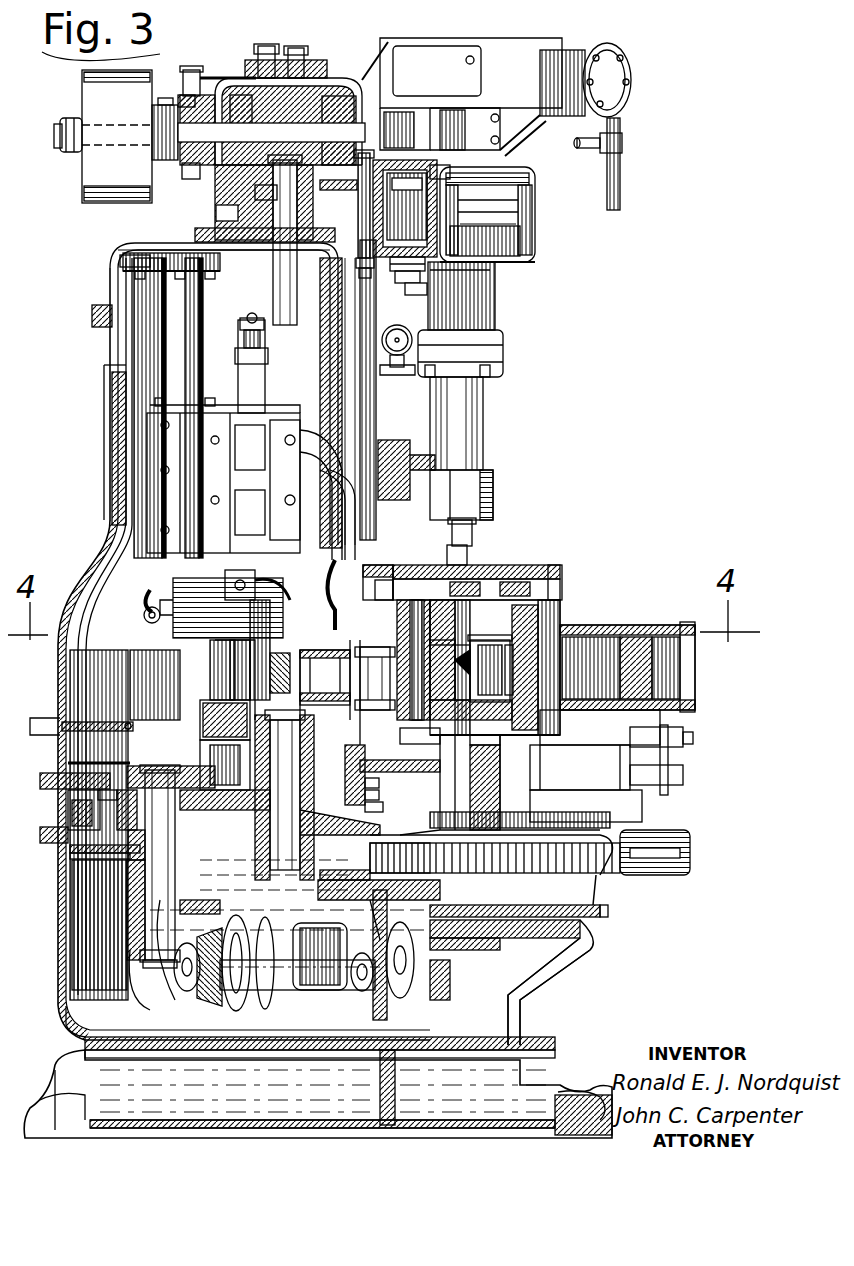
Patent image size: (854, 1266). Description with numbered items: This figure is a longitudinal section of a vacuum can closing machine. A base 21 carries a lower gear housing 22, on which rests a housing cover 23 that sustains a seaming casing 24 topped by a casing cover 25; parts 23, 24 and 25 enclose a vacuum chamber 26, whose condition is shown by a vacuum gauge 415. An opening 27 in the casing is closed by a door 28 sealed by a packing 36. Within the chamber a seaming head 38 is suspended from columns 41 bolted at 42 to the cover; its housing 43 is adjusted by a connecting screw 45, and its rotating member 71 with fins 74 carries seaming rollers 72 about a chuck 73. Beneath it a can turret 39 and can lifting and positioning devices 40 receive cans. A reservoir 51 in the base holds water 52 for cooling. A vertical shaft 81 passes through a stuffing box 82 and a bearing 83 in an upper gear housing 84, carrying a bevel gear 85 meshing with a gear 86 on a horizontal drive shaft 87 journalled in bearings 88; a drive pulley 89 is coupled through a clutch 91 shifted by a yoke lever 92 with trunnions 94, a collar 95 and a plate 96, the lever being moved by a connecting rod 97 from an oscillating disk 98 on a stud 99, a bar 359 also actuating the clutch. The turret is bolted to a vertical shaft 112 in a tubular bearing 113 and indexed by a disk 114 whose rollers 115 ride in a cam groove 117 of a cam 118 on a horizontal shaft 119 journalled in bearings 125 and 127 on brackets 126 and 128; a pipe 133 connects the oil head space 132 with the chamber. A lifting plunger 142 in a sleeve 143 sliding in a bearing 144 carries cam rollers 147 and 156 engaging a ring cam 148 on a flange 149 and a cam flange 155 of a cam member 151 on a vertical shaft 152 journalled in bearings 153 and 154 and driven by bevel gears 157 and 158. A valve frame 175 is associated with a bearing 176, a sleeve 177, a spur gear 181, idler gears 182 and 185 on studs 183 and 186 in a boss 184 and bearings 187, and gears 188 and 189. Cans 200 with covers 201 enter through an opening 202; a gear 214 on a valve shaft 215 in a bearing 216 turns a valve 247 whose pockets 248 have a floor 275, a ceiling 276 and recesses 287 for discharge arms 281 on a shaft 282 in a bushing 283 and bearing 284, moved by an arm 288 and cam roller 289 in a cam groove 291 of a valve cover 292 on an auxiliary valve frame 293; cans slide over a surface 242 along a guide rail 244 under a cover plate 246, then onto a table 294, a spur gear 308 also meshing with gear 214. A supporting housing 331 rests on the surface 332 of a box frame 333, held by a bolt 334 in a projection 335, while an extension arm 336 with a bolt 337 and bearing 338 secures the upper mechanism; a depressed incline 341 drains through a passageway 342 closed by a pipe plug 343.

The base 21 is at (522, 1086).
The lower gear housing 22 is at (62, 1020).
The housing cover 23 is at (68, 821).
The seaming casing 24 is at (112, 352).
The casing cover 25 is at (110, 291).
The vacuum chamber 26 is at (128, 335).
The opening 27 is at (130, 432).
The door 28 is at (112, 410).
The packing 36 is at (115, 380).
The seaming head 38 is at (158, 520).
The can turret 39 is at (292, 655).
The can lifting and positioning devices 40 is at (130, 765).
The columns 41 is at (112, 310).
The bolts 42 is at (130, 258).
The seaming head housing 43 is at (160, 441).
The connecting screw 45 is at (246, 326).
The reservoir 51 is at (545, 1052).
The water 52 is at (462, 1108).
The rotating member 71 is at (150, 613).
The seaming rollers 72 is at (188, 640).
The chuck 73 is at (226, 580).
The fins or annular ridges 74 is at (172, 583).
The vertical shaft 81 is at (252, 355).
The stuffing box 82 is at (230, 254).
The bearing 83 is at (262, 220).
The upper gear housing 84 is at (216, 216).
The bevel gear 85 is at (333, 163).
The bevel gear 86 is at (238, 106).
The horizontal drive shaft 87 is at (262, 133).
The bearings 88 is at (208, 105).
The drive pulley 89 is at (82, 90).
The clutch 91 is at (165, 137).
The yoke lever 92 is at (186, 96).
The trunnions 94 is at (178, 102).
The collar 95 is at (180, 170).
The plate 96 is at (178, 120).
The connecting rod 97 is at (205, 76).
The oscillating disk 98 is at (268, 60).
The stud 99 is at (298, 60).
The vertical shaft 112 is at (302, 772).
The tubular bearing 113 is at (322, 815).
The disk 114 is at (352, 846).
The rollers 115 is at (355, 876).
The cam groove 117 is at (265, 992).
The cam 118 is at (302, 988).
The horizontal shaft 119 is at (450, 978).
The bearing 125 is at (442, 1000).
The bracket 126 is at (342, 990).
The bearing 127 is at (250, 988).
The bracket 128 is at (210, 990).
The head space 132 is at (120, 866).
The pipe 133 is at (392, 340).
The lifting plunger 142 is at (215, 690).
The sleeve 143 is at (220, 722).
The bearing 144 is at (215, 756).
The cam roller 147 is at (140, 882).
The ring cam 148 is at (92, 850).
The flange 149 is at (110, 858).
The cam member 151 is at (130, 874).
The vertical shaft 152 is at (182, 852).
The bearing 153 is at (130, 777).
The bearing 154 is at (140, 916).
The cam flange 155 is at (68, 790).
The cam roller 156 is at (68, 834).
The bevel gear 157 is at (182, 976).
The bevel gear 158 is at (200, 1000).
The valve frame 175 is at (642, 805).
The bearing 176 is at (500, 315).
The sleeve 177 is at (484, 396).
The spur gear 181 is at (500, 230).
The idler gear 182 is at (496, 262).
The stud 183 is at (420, 290).
The boss 184 is at (482, 283).
The idler gear 185 is at (396, 198).
The stud 186 is at (368, 155).
The bearings 187 is at (379, 175).
The gear 188 is at (500, 208).
The gear 189 is at (258, 193).
The can 200 is at (340, 670).
The cover 201 is at (557, 644).
The opening 202 is at (338, 575).
The gear 214 is at (531, 870).
The valve shaft 215 is at (498, 744).
The bearing 216 is at (498, 770).
The surface 242 is at (672, 712).
The guide rail 244 is at (672, 684).
The cover plate 246 is at (650, 628).
The valve 247 is at (551, 666).
The pocket 248 is at (520, 652).
The floor 275 is at (490, 710).
The ceiling 276 is at (506, 640).
The discharge arms 281 is at (455, 700).
The vertical shaft 282 is at (412, 633).
The bushing 283 is at (462, 600).
The bearing 284 is at (432, 736).
The recesses 287 is at (546, 706).
The arm 288 is at (458, 560).
The cam roller 289 is at (392, 580).
The cam groove 291 is at (546, 568).
The valve cover 292 is at (562, 580).
The auxiliary valve frame 293 is at (487, 530).
The table 294 is at (432, 762).
The spur gear 308 is at (692, 862).
The lower supporting housing 331 is at (600, 905).
The upper horizontal surface 332 is at (598, 962).
The box frame 333 is at (590, 978).
The bolt 334 is at (606, 914).
The projection 335 is at (470, 950).
The extension arm 336 is at (392, 445).
The bolt 337 is at (398, 470).
The bearing 338 is at (482, 473).
The depressed incline 341 is at (380, 780).
The passageway 342 is at (380, 795).
The pipe plug 343 is at (386, 806).
The bar 359 is at (368, 77).
The vacuum gauge 415 is at (505, 345).